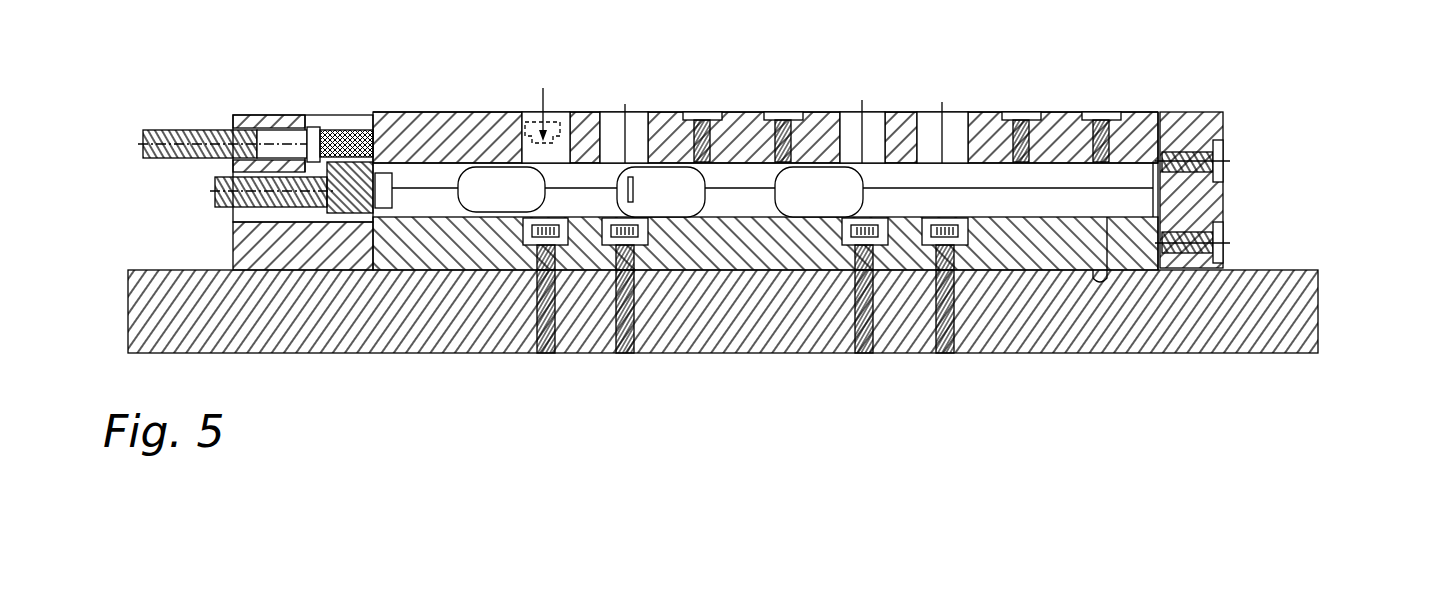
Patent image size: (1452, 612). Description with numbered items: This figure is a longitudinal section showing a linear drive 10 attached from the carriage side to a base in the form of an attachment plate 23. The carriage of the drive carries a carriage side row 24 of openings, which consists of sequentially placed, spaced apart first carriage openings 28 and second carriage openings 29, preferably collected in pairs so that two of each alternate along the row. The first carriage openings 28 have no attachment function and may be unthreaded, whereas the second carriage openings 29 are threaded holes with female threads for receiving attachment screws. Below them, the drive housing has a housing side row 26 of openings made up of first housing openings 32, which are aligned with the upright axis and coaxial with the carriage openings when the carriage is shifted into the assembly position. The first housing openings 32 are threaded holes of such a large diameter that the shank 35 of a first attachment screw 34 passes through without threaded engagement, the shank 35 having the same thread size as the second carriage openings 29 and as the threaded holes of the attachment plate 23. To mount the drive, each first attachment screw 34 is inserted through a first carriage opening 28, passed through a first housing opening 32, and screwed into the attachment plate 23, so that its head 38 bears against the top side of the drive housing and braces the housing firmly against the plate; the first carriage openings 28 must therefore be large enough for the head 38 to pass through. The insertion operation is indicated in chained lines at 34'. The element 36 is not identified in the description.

The linear drive 10 is at (1241, 140).
The attachment plate 23 is at (1322, 315).
The carriage side row of openings 24 is at (1056, 119).
The row of openings on the housing side 26 is at (503, 246).
The first carriage openings 28 is at (523, 113).
The second carriage openings 29 is at (760, 122).
The first housing openings 32 is at (642, 290).
The first attachment screw 34 is at (765, 337).
The attachment screw being inserted 34' is at (562, 132).
The shank 35 is at (643, 313).
The guide rod 36 is at (772, 200).
The head 38 is at (638, 218).